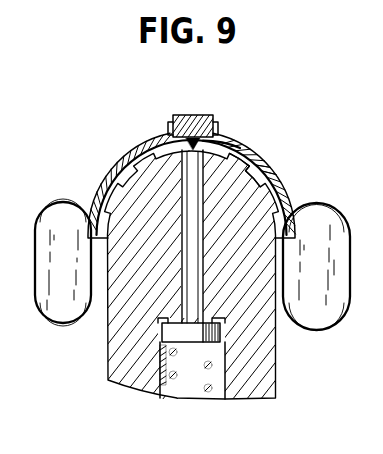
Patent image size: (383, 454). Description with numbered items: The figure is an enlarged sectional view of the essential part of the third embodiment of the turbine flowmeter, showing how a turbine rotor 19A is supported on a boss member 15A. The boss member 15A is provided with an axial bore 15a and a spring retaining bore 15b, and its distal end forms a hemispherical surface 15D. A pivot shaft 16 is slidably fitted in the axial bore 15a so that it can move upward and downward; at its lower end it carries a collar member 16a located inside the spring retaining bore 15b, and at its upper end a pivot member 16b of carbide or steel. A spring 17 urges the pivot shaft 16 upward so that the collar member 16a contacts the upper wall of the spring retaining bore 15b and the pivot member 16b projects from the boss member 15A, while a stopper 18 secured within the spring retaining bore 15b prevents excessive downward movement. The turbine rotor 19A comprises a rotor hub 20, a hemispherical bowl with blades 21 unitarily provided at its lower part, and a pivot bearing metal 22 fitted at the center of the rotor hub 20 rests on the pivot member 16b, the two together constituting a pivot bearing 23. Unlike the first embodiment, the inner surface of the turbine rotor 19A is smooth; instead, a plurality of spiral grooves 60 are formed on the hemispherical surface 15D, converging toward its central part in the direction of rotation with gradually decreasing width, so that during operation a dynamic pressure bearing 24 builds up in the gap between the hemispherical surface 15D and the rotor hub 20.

The boss member 15A is at (278, 358).
The axial bore 15a is at (193, 248).
The spring retaining bore 15b is at (220, 387).
The hemispherical surface 15D is at (290, 200).
The pivot shaft 16 is at (185, 242).
The collar member 16a is at (160, 333).
The pivot member 16b is at (222, 147).
The spring 17 is at (172, 380).
The stopper 18 is at (160, 367).
The turbine rotor 19A is at (130, 148).
The rotor hub 20 is at (105, 178).
The blades 21 is at (57, 213).
The pivot bearing metal 22 is at (195, 115).
The pivot bearing 23 is at (178, 112).
The dynamic pressure bearing 24 is at (243, 165).
The spiral grooves 60 is at (270, 177).